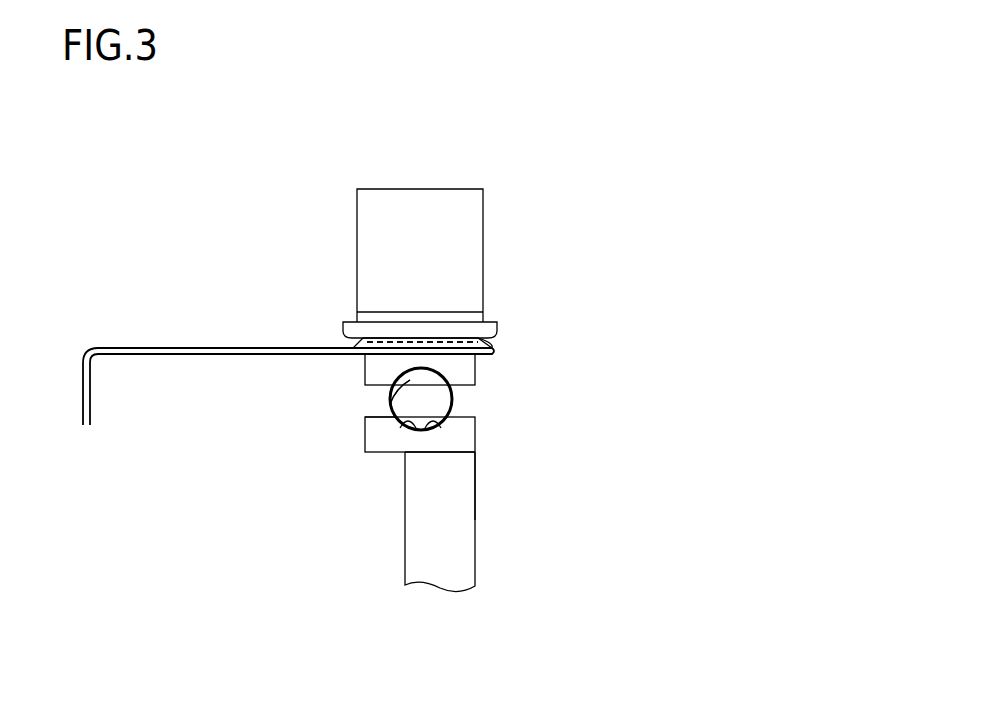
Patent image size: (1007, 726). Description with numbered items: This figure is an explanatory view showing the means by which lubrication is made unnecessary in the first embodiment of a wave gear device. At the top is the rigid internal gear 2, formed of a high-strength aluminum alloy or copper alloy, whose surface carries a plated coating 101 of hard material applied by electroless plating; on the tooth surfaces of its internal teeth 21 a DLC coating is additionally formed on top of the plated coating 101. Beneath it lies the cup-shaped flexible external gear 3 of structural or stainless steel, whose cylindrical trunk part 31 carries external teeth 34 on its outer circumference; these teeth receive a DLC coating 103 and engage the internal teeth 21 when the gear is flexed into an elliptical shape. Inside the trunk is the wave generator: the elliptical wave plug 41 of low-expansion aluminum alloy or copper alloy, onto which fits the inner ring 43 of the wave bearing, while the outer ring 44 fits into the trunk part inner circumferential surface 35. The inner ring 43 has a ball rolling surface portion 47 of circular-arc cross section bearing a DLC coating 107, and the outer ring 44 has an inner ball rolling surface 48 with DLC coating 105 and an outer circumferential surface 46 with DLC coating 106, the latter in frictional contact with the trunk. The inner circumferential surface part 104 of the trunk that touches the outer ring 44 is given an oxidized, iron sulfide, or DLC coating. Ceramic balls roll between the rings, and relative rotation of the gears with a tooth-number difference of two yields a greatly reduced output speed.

The rigid internal gear 2 is at (492, 222).
The flexible external gear 3 is at (152, 324).
The cylindrical trunk part 31 is at (98, 347).
The trunk part inner circumferential surface 35 is at (203, 355).
The internal teeth 21 is at (492, 345).
The external teeth 34 is at (477, 360).
The outer ring 44 is at (457, 373).
The wave plug 41 is at (448, 563).
The inner ring 43 is at (432, 445).
The outer circumferential surface 46 is at (355, 355).
The ball rolling surface portion 47 is at (383, 452).
The ball rolling surface 48 is at (400, 422).
The plated coating 101 is at (485, 297).
The DLC coating 103 is at (492, 350).
The inner circumferential surface part 104 is at (325, 355).
The DLC coating 105 is at (423, 368).
The DLC coating 106 is at (400, 340).
The DLC coating 107 is at (474, 478).